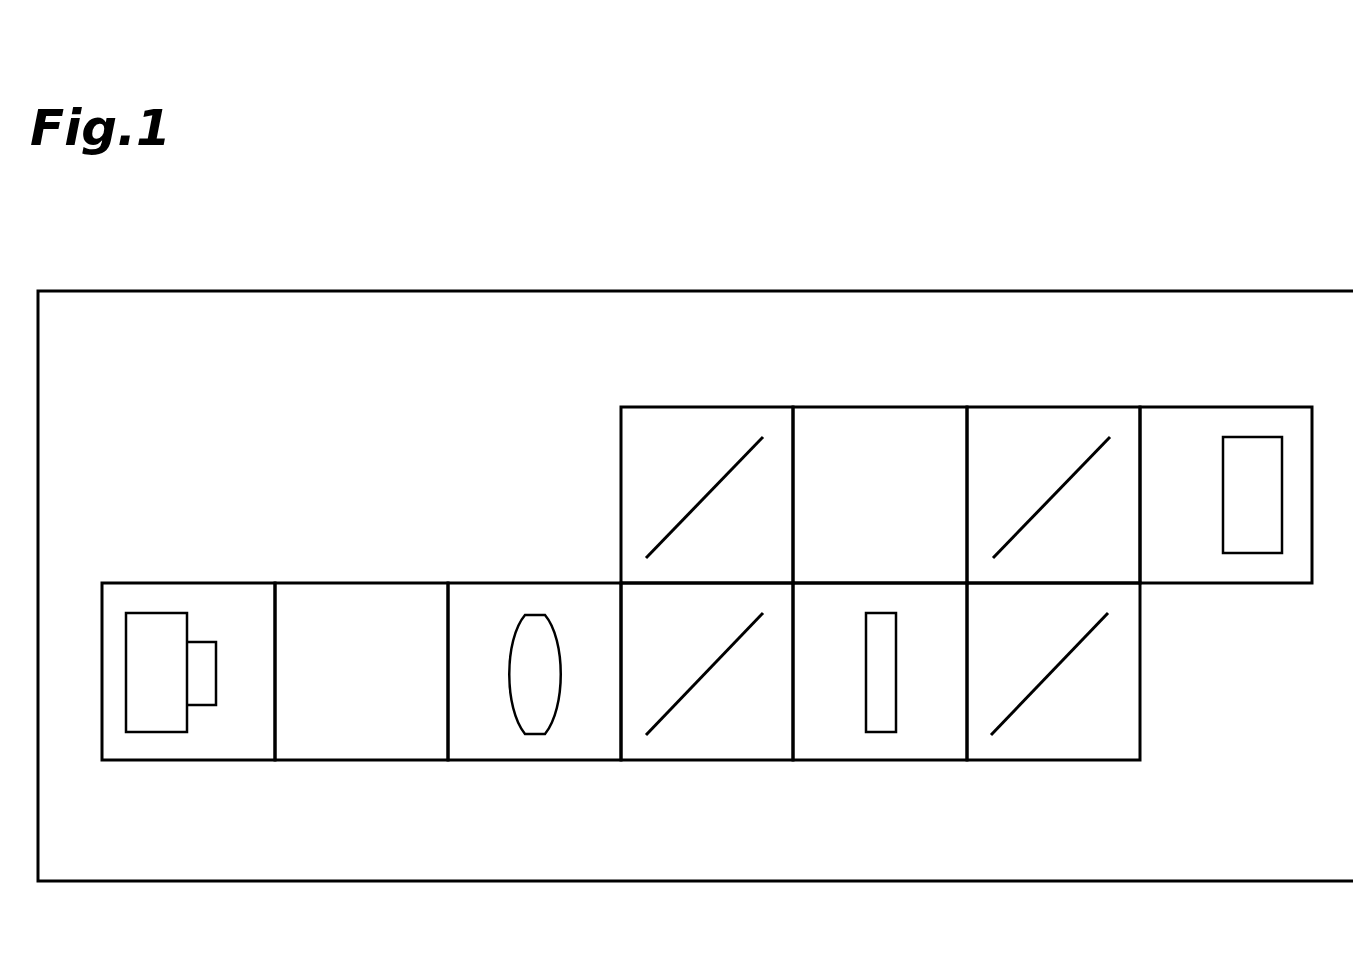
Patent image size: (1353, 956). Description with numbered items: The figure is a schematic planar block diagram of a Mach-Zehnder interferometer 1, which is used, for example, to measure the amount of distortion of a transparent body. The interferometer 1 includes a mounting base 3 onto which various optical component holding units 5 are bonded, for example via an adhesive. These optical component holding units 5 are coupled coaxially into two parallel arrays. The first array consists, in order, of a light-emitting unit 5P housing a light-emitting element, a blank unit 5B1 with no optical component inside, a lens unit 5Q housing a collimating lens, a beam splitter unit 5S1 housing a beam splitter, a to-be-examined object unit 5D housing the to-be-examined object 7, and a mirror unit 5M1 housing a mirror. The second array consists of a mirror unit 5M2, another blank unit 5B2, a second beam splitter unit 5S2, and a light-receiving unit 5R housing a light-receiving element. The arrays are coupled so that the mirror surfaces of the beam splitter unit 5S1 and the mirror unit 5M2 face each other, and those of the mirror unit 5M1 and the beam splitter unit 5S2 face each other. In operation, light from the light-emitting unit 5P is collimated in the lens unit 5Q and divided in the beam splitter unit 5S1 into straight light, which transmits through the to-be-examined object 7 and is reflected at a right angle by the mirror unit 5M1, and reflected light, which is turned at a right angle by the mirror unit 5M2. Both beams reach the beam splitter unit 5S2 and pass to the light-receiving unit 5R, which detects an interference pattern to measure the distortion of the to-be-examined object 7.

The Mach-Zehnder interferometer 1 is at (250, 276).
The mounting base 3 is at (522, 313).
The optical component holding units 5 is at (707, 593).
The light-emitting unit 5P is at (190, 745).
The blank unit 5B1 is at (360, 745).
The lens unit 5Q is at (537, 742).
The beam splitter unit 5S1 is at (707, 742).
The to-be-examined object unit 5D is at (886, 742).
The mirror unit 5M1 is at (1058, 744).
The mirror unit 5M2 is at (678, 425).
The blank unit 5B2 is at (862, 425).
The beam splitter unit 5S2 is at (1046, 425).
The light-receiving unit 5R is at (1228, 423).
The to-be-examined object 7 is at (875, 677).